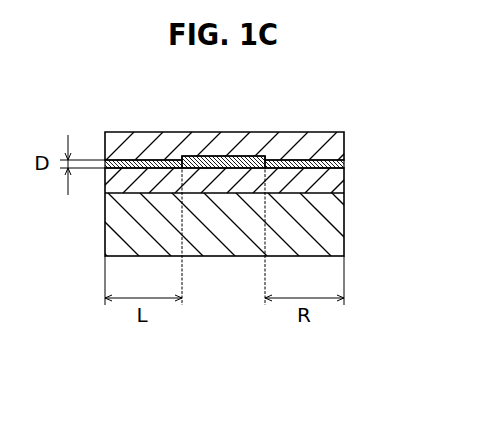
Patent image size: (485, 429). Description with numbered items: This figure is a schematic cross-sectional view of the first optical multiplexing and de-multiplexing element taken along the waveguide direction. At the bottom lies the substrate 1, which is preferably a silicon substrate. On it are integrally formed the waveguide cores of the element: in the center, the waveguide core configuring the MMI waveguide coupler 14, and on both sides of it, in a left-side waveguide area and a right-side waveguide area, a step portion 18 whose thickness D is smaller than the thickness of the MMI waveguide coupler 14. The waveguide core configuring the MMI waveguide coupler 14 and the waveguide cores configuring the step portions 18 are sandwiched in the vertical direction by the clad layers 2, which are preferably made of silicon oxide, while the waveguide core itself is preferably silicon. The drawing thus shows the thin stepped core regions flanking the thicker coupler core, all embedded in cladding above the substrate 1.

The substrate 1 is at (327, 224).
The clad layer 2 is at (336, 140).
The MMI waveguide coupler 14 is at (221, 156).
The step portion 18 is at (147, 160).